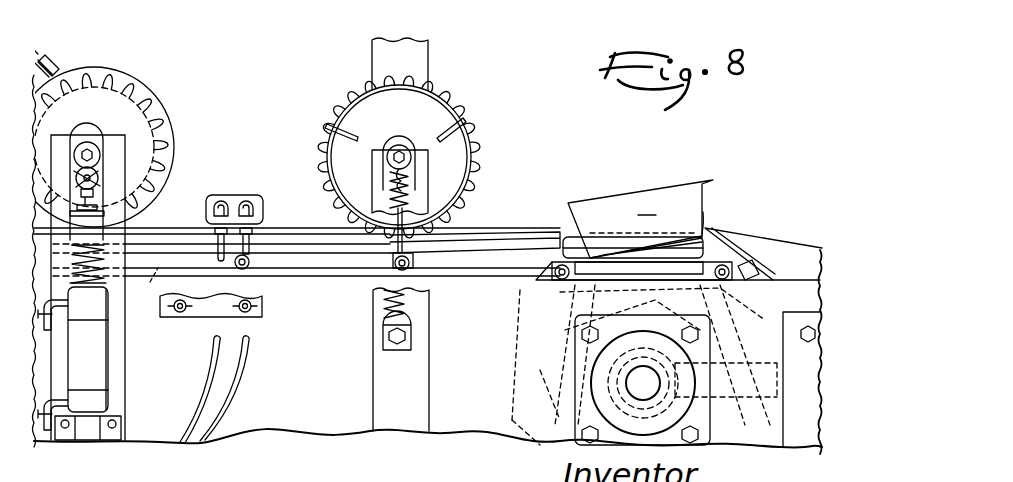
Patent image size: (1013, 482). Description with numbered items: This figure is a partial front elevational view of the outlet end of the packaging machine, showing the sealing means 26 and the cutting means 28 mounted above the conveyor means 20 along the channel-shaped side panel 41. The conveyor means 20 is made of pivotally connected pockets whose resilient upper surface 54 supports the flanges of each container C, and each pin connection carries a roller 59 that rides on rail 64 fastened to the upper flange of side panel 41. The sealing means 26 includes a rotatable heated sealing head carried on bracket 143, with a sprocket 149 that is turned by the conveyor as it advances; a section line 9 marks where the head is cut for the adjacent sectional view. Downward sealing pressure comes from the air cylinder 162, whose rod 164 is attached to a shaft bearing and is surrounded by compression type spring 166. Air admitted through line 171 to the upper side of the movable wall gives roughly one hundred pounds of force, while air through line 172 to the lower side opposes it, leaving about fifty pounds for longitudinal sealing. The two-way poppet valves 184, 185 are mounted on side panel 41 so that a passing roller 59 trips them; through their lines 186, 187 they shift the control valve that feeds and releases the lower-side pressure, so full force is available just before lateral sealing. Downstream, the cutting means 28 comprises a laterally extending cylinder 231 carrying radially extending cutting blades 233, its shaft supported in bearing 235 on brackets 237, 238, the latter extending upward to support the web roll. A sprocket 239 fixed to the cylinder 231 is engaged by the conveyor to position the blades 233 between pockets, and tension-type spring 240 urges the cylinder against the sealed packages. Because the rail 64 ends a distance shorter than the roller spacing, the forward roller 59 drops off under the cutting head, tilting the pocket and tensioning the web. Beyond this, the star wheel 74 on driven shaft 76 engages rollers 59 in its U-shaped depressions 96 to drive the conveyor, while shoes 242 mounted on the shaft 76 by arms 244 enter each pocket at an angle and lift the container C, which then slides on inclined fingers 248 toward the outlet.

The section line 9— 9 is at (86, 54).
The conveyor means 20 is at (495, 218).
The sealing means 26 is at (138, 69).
The cutting means 28 is at (486, 120).
The side panel 41 is at (293, 422).
The upper surface 54 is at (530, 236).
The roller 59 is at (246, 268).
The rail 64 is at (461, 276).
The star wheel 74 is at (535, 358).
The driven shaft 76 is at (633, 382).
The U-shaped depression 96 is at (510, 412).
The bracket 143 is at (116, 387).
The sprocket 149 is at (158, 140).
The air cylinder 162 is at (100, 372).
The rod 164 is at (92, 195).
The compression type spring 166 is at (103, 270).
The air line 171 is at (50, 328).
The air line 172 is at (45, 442).
The two-way poppet valve 184 is at (210, 238).
The two-way poppet valve 185 is at (258, 238).
The line 186 is at (210, 350).
The line 187 is at (244, 352).
The cylinder 231 is at (430, 105).
The cutting blade 233 is at (323, 128).
The bearing 235 is at (401, 145).
The bracket 237 is at (385, 380).
The bracket 238 is at (420, 50).
The sprocket 239 is at (352, 87).
The tension-type spring 240 is at (425, 205).
The shoe 242 is at (703, 232).
The arm 244 is at (650, 298).
The finger 248 is at (765, 248).
The container C is at (640, 219).